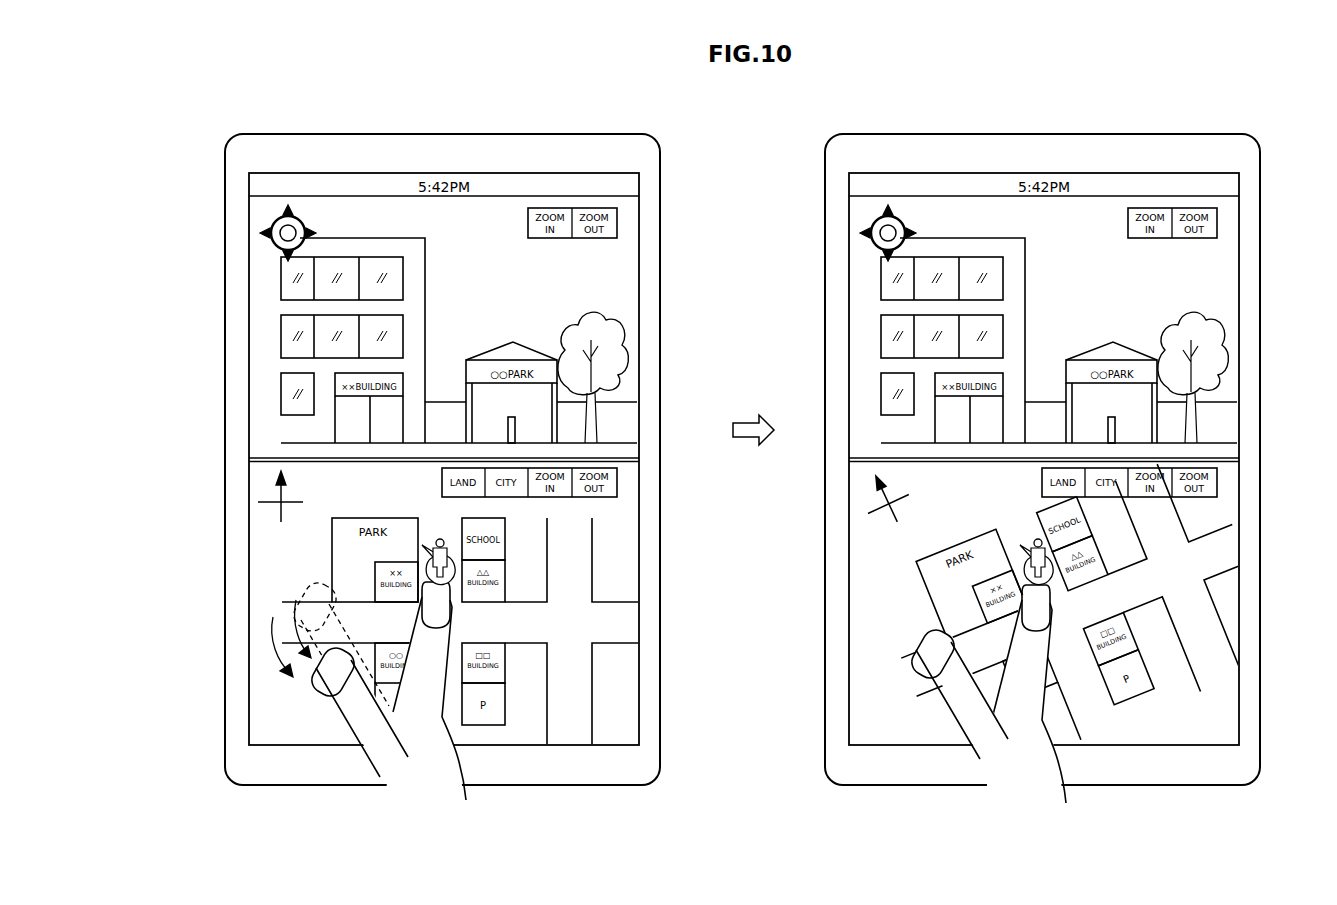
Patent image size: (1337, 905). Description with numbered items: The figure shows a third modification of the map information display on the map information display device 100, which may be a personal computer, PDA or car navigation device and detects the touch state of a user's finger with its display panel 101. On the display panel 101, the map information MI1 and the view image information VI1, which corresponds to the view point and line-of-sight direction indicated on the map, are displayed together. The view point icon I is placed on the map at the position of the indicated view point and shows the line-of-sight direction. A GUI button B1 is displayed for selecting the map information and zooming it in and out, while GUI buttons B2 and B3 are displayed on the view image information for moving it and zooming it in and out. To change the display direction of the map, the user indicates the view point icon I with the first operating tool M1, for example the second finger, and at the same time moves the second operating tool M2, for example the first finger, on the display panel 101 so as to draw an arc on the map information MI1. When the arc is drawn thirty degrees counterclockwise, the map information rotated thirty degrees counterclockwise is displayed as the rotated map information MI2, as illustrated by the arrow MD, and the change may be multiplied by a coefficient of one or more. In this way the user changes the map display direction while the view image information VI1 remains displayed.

The map information display device 100 is at (606, 134).
The display panel 101 is at (626, 173).
The GUI button B2 is at (271, 228).
The GUI button B1 is at (618, 222).
The view image information VI1 is at (618, 267).
The GUI button B3 is at (618, 487).
The map information MI1 is at (620, 517).
The rotated map information MI2 is at (1220, 517).
The view point icon I is at (418, 566).
The arrow MD is at (275, 646).
The first operating tool M1 is at (466, 800).
The second operating tool M2 is at (362, 762).